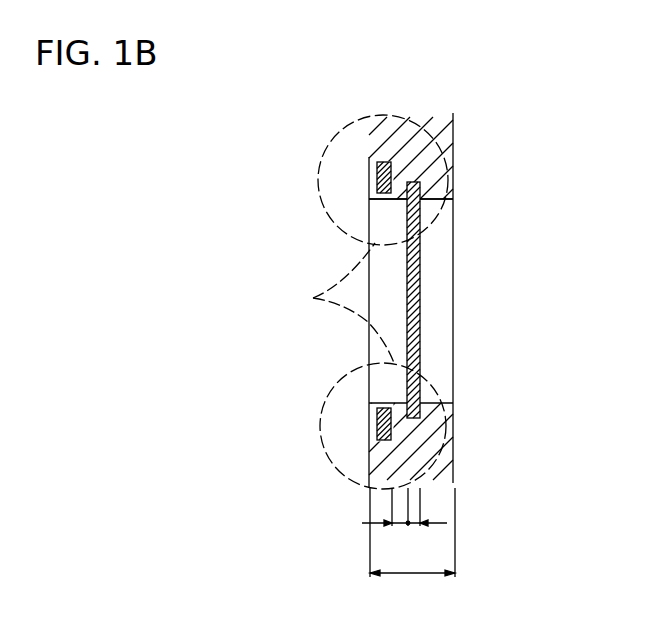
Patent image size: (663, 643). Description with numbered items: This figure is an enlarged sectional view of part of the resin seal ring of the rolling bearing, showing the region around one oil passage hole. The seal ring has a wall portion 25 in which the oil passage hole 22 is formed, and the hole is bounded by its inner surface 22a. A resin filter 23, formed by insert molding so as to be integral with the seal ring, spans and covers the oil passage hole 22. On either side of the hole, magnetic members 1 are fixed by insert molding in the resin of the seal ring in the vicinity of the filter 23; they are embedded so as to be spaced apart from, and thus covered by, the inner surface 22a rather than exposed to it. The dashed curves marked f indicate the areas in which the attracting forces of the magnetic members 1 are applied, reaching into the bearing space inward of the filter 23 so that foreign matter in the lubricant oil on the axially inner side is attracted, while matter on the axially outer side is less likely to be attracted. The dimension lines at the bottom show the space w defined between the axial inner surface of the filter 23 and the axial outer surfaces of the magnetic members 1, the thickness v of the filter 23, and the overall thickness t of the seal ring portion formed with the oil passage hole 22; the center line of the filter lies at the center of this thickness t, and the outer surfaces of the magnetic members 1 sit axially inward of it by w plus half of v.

The magnetic member 1 is at (378, 180).
The oil passage hole 22 is at (440, 372).
The inner surface of oil passage hole 22a is at (430, 203).
The filter 23 is at (415, 337).
The wall portion 25 is at (420, 148).
The attracting force area f is at (344, 303).
The space w is at (386, 532).
The thickness of filter v is at (427, 507).
The thickness of seal ring portion t is at (412, 532).